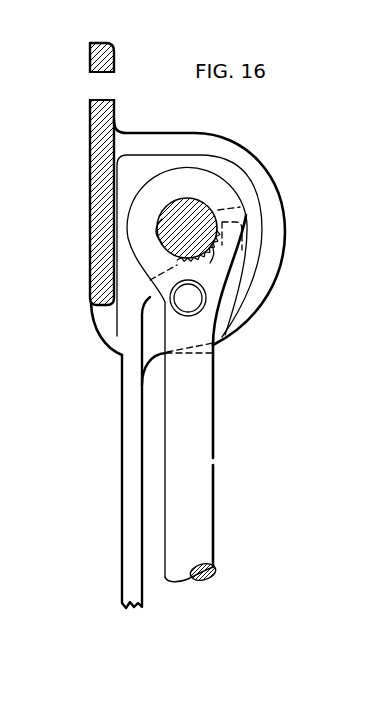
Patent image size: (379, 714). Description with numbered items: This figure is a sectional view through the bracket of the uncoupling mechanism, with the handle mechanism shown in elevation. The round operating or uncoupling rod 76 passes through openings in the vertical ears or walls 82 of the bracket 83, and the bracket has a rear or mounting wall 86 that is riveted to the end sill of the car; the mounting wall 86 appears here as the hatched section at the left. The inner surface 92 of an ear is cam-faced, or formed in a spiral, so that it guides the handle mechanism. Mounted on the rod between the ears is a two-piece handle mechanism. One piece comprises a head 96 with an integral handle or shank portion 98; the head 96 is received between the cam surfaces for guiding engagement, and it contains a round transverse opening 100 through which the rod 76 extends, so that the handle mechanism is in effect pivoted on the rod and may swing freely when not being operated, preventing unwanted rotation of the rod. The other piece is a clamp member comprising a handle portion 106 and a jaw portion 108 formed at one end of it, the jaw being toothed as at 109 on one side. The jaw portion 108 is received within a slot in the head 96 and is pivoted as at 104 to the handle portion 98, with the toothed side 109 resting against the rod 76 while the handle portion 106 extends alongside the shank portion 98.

The operating or uncoupling rod 76 is at (172, 216).
The vertical ears or walls 82 is at (277, 232).
The bracket 83 is at (88, 42).
The rear or mounting wall 86 is at (74, 169).
The inner surface 92 is at (245, 275).
The head 96 is at (187, 372).
The handle or shank portion 98 is at (191, 473).
The opening 100 is at (145, 234).
The pivot 104 is at (191, 302).
The handle portion 106 is at (132, 555).
The jaw portion 108 is at (230, 307).
The teeth 109 is at (198, 256).